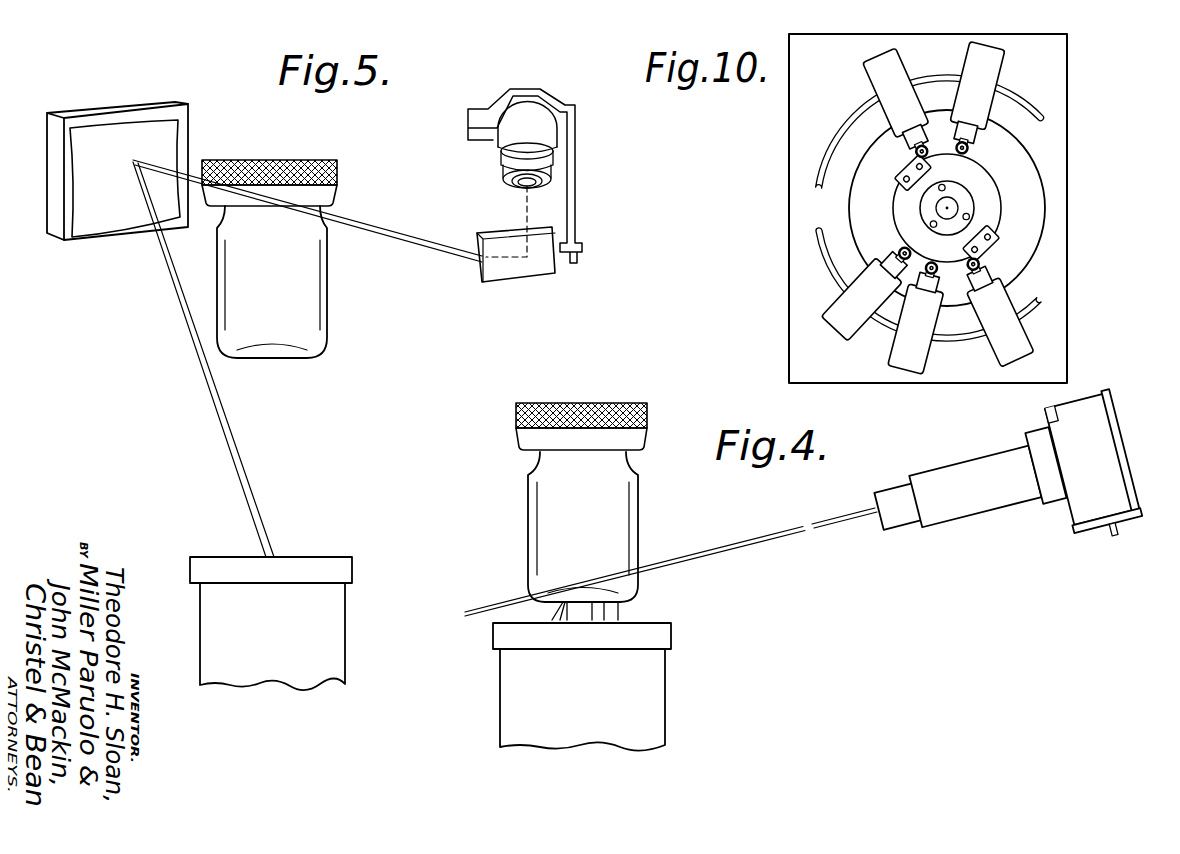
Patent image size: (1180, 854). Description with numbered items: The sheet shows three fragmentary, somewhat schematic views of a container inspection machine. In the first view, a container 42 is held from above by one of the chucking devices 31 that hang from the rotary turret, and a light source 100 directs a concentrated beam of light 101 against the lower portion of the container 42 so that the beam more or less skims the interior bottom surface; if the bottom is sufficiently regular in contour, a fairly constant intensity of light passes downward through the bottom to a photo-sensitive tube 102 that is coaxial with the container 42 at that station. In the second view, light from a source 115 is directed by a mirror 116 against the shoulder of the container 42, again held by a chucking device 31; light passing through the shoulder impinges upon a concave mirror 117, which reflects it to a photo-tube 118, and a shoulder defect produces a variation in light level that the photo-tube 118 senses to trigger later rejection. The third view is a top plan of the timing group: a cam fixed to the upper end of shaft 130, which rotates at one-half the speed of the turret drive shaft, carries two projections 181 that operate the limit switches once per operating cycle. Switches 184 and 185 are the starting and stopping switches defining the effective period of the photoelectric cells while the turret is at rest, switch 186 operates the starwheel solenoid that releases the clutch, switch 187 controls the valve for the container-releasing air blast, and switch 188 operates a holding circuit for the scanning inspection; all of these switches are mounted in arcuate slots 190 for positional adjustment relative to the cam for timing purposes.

In FIG. 5, the chucking device 31 is at (343, 172).
In FIG. 4, the chucking device 31 is at (650, 418).
In FIG. 5, the container 42 is at (330, 290).
In FIG. 4, the container 42 is at (640, 497).
In FIG. 4, the light source 100 is at (968, 468).
In FIG. 4, the beam of light 101 is at (775, 528).
In FIG. 4, the photo-sensitive tube 102 is at (660, 695).
In FIG. 5, the light source 115 is at (510, 176).
In FIG. 5, the mirror 116 is at (500, 247).
In FIG. 5, the concave mirror 117 is at (117, 233).
In FIG. 5, the photo-tube 118 is at (343, 632).
In FIG. 10, the shaft 130 is at (958, 210).
In FIG. 10, the cam projection 181 is at (988, 247).
In FIG. 10, the limit switch 184 is at (872, 77).
In FIG. 10, the limit switch 185 is at (843, 327).
In FIG. 10, the limit switch 186 is at (923, 354).
In FIG. 10, the limit switch 187 is at (1020, 348).
In FIG. 10, the limit switch 188 is at (995, 72).
In FIG. 10, the arcuate slot 190 is at (817, 230).